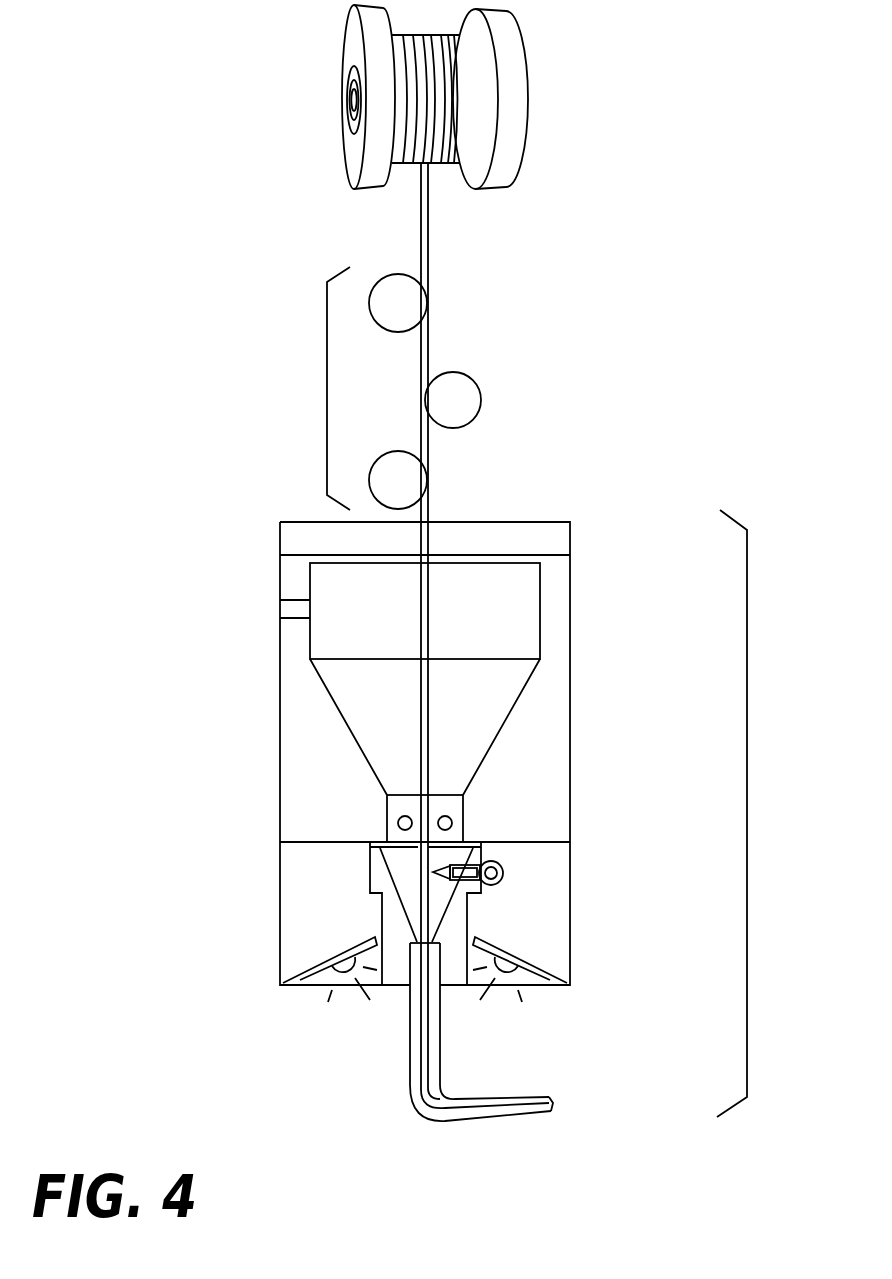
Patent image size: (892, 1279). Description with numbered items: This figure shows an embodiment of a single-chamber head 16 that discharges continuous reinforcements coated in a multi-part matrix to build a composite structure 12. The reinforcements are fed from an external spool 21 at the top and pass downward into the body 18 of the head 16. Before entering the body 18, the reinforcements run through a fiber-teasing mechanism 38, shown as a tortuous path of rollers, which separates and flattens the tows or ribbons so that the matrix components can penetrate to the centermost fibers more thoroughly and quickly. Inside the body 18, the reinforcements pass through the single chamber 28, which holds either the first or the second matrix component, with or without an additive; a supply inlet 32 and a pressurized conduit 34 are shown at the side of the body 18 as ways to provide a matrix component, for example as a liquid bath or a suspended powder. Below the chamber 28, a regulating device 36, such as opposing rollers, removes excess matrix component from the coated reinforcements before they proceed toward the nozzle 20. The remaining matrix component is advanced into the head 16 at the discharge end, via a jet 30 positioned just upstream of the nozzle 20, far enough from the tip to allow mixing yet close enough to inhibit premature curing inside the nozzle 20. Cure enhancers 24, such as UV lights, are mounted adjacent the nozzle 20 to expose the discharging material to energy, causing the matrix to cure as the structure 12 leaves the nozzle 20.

The composite structure 12 is at (517, 1103).
The head 16 is at (747, 838).
The body 18 is at (133, 654).
The nozzle 20 is at (435, 1042).
The external spool 21 is at (517, 163).
The cure enhancer 24 is at (325, 983).
The chamber 28 is at (383, 615).
The jet 30 is at (483, 857).
The supply inlet 32 is at (248, 602).
The pressurized conduit 34 is at (292, 612).
The regulating device 36 is at (398, 822).
The fiber-teasing mechanism 38 is at (327, 393).